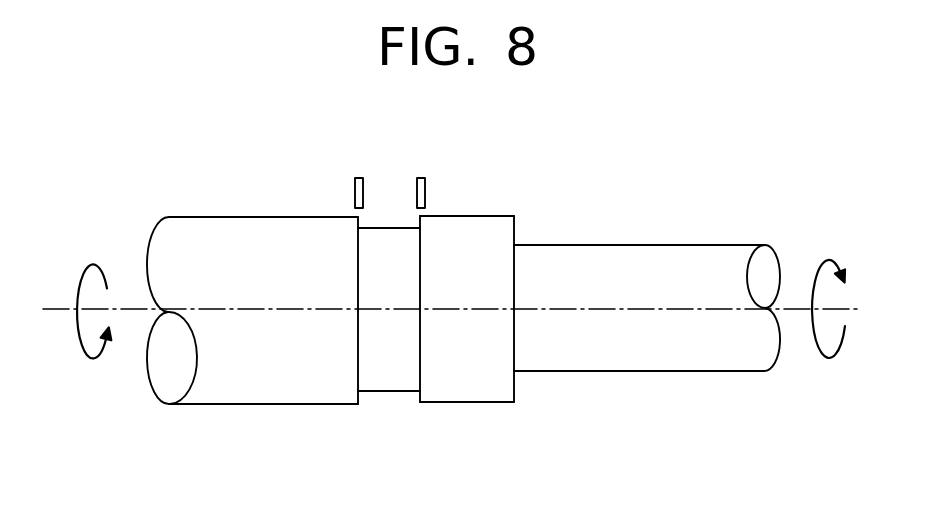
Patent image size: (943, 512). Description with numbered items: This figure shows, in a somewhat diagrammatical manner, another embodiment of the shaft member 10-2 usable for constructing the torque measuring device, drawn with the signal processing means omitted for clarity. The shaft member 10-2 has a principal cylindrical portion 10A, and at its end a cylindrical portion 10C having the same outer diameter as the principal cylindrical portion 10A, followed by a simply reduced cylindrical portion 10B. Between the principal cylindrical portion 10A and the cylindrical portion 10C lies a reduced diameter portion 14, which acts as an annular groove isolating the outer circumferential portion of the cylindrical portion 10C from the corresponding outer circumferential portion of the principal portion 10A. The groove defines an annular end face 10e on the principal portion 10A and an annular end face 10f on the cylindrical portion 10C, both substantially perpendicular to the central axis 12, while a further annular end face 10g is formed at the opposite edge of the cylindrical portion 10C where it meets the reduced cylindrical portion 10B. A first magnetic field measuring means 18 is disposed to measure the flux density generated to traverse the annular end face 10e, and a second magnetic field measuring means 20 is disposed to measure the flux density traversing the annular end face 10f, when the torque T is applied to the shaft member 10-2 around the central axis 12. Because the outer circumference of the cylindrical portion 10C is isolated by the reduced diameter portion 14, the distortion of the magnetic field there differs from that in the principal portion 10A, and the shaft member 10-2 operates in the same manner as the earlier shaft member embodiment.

The shaft member 10-2 is at (199, 213).
The principal cylindrical portion 10A is at (268, 404).
The reduced cylindrical portion 10B is at (663, 371).
The cylindrical portion 10C is at (472, 402).
The annular end face 10e is at (358, 355).
The annular end face 10f is at (420, 355).
The annular end face 10g is at (514, 271).
The central axis 12 is at (650, 310).
The reduced diameter portion 14 is at (393, 391).
The first magnetic field measuring means 18 is at (355, 183).
The second magnetic field measuring means 20 is at (425, 192).
The torque T is at (76, 281).